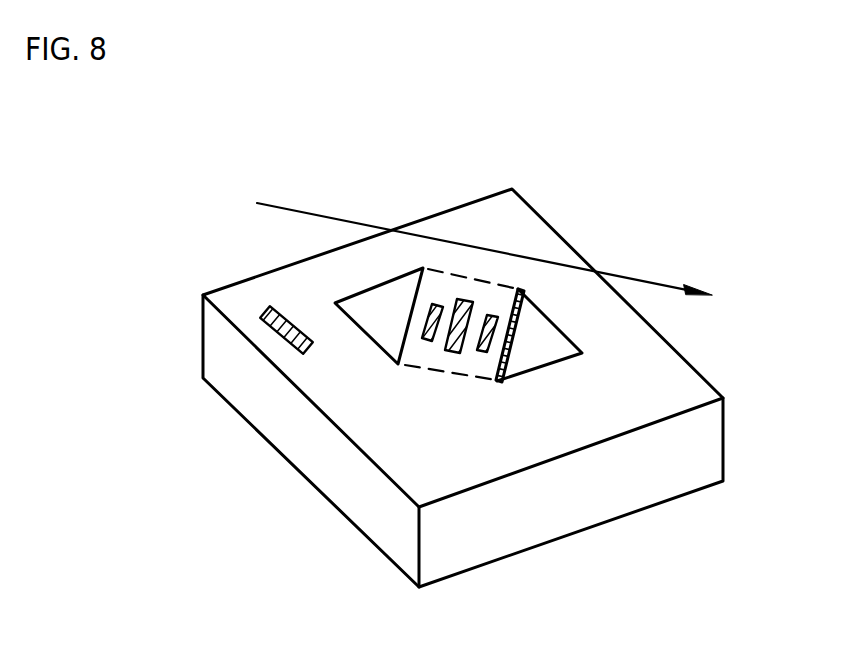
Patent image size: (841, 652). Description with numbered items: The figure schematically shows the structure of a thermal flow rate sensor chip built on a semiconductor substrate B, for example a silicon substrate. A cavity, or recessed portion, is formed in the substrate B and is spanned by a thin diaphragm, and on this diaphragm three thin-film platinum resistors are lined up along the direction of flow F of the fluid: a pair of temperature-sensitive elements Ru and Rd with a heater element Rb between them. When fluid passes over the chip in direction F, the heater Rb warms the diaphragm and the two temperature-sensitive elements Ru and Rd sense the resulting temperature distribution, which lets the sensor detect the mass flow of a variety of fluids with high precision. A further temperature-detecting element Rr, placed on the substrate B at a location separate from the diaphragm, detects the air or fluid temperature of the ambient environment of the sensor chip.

The semiconductor substrate B is at (517, 230).
The direction of flow F is at (502, 263).
The temperature-detecting element Rr is at (260, 312).
The temperature-sensitive element Ru is at (426, 325).
The heater element Rb is at (445, 351).
The temperature-sensitive element Rd is at (477, 351).